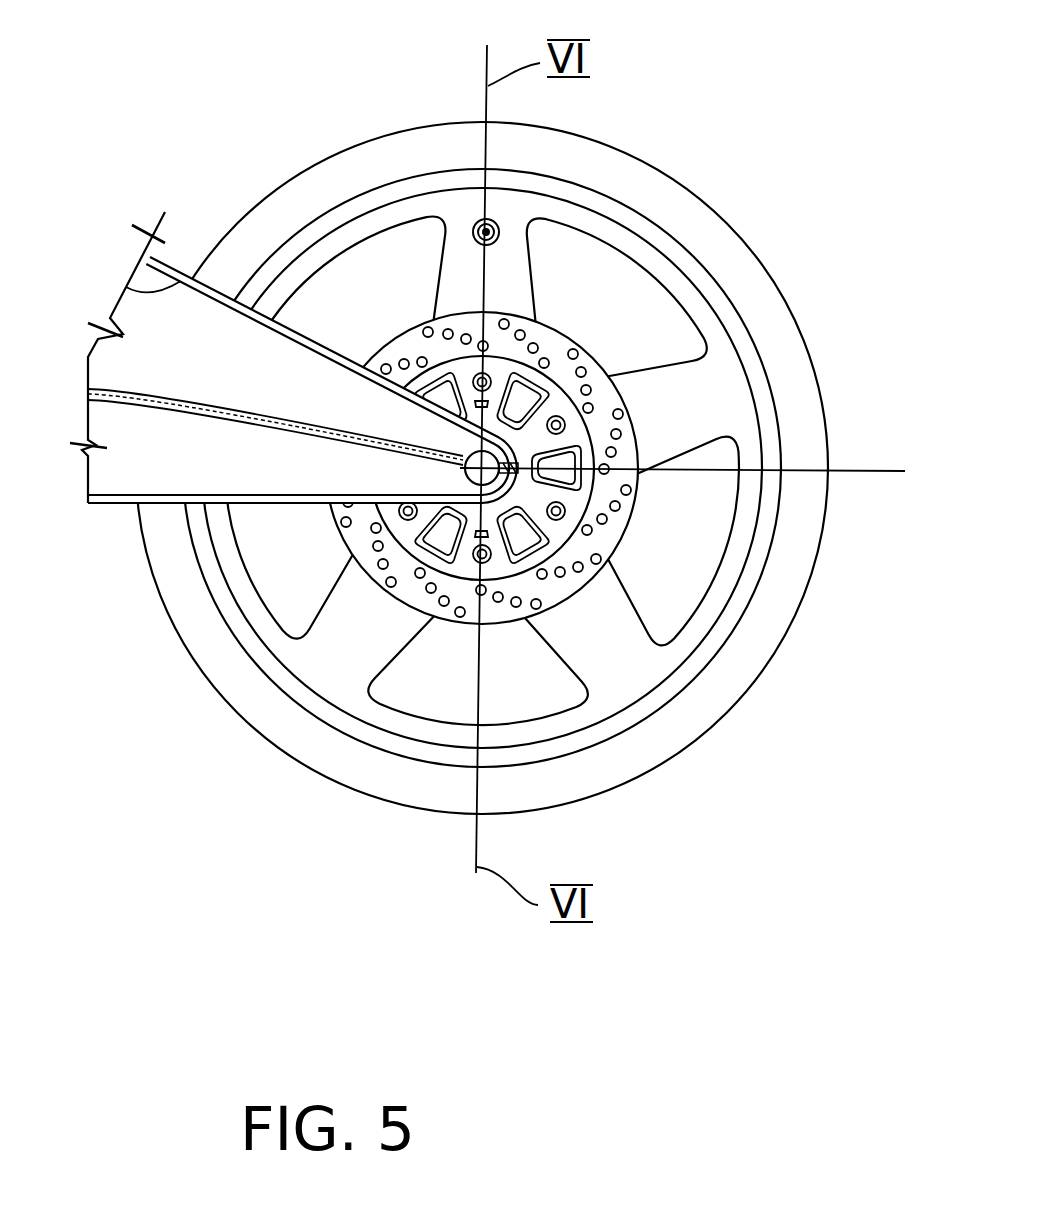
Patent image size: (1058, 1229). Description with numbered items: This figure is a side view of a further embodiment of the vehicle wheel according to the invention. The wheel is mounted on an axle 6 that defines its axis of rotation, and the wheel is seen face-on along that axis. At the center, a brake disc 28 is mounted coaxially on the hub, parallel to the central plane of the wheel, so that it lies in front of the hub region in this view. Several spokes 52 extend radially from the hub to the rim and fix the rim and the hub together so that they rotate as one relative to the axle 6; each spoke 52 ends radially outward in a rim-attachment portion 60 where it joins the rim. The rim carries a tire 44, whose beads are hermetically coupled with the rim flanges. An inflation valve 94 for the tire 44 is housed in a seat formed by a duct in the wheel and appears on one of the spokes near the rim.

The axle 6 is at (466, 476).
The brake disc 28 is at (625, 437).
The tire 44 is at (775, 602).
The spoke 52 is at (510, 258).
The rim-attachment portion 60 is at (418, 240).
The inflation valve 94 is at (470, 224).